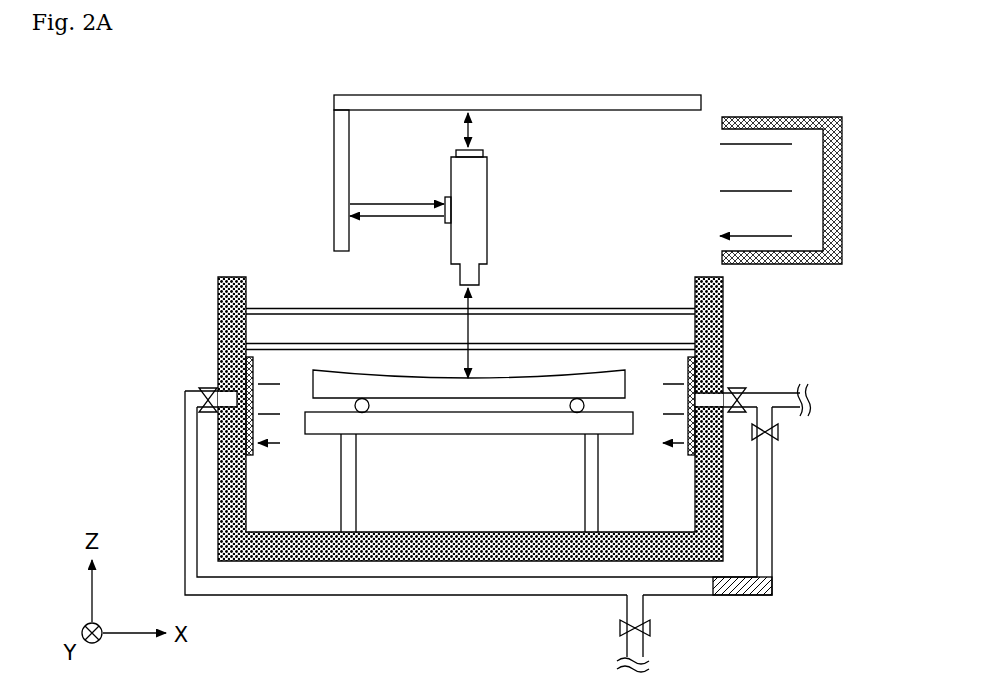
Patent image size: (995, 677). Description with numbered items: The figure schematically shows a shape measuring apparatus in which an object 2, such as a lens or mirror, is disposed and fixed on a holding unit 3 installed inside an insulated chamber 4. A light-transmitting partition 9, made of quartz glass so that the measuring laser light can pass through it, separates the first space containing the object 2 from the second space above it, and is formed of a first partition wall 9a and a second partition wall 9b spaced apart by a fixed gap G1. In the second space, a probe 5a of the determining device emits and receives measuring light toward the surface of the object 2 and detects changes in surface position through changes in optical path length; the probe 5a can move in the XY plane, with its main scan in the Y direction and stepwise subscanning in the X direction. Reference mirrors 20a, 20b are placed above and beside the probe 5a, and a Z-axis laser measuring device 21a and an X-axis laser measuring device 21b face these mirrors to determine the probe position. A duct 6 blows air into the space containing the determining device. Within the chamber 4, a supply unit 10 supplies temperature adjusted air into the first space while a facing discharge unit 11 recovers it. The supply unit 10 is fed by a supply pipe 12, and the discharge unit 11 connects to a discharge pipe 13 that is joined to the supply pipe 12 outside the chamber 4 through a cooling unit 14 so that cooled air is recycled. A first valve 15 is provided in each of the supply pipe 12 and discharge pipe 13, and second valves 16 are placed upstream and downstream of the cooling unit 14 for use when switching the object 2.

The object 2 is at (543, 387).
The holding unit 3 is at (620, 434).
The chamber 4 is at (713, 300).
The probe 5a is at (487, 203).
The duct 6 is at (767, 117).
The partition 9 is at (470, 287).
The first partition wall 9a is at (538, 308).
The second partition wall 9b is at (516, 262).
The supply unit 10 is at (695, 362).
The discharge unit 11 is at (247, 362).
The supply pipe 12 is at (792, 393).
The discharge pipe 13 is at (237, 398).
The cooling unit 14 is at (772, 585).
The first valve 15 is at (206, 413).
The second valve 16 is at (778, 433).
The reference mirror 20a is at (540, 95).
The reference mirror 20b is at (334, 158).
The Z-axis laser measuring device 21a is at (483, 154).
The X-axis laser measuring device 21b is at (445, 222).
The fixed gap G1 is at (305, 333).